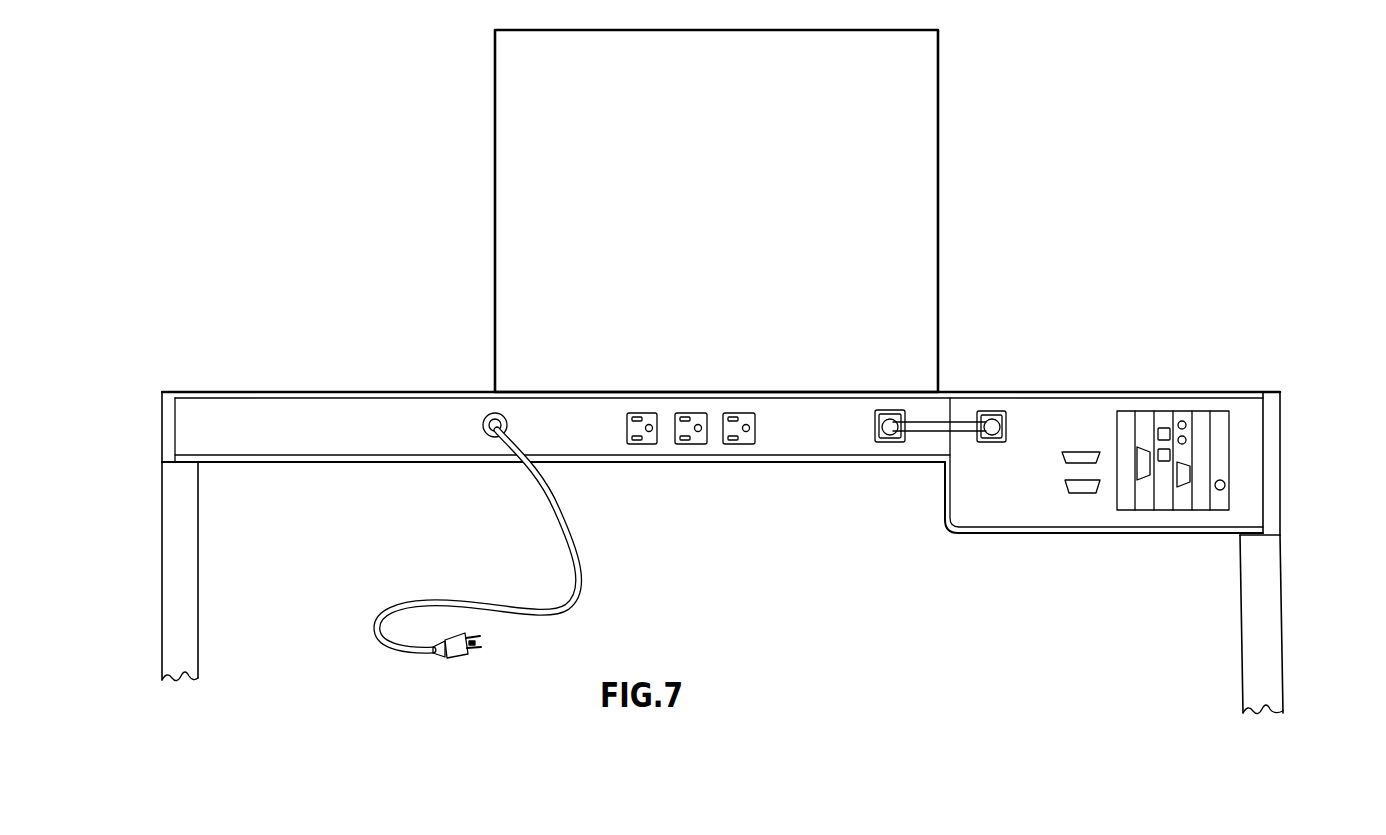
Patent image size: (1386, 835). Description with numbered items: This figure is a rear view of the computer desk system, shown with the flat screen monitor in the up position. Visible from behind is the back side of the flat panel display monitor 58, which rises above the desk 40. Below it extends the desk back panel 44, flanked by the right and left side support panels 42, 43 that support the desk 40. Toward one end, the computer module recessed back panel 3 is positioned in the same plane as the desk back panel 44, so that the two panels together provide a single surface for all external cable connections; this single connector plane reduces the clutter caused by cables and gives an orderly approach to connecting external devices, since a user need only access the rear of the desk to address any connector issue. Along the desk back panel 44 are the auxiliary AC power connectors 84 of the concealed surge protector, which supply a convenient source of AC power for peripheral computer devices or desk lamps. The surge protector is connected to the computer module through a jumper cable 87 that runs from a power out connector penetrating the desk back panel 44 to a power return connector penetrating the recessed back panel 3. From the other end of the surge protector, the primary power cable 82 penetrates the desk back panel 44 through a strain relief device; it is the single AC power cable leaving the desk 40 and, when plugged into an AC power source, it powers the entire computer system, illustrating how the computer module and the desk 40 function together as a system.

The desk 40 is at (135, 308).
The computer module recessed back panel 3 is at (1052, 415).
The side support panel 42 is at (169, 615).
The side support panel 43 is at (1258, 589).
The desk back panel 44 is at (390, 418).
The flat panel display monitor 58 is at (920, 87).
The primary power cable 82 is at (405, 655).
The auxiliary AC power connectors 84 is at (700, 441).
The jumper cable 87 is at (932, 434).